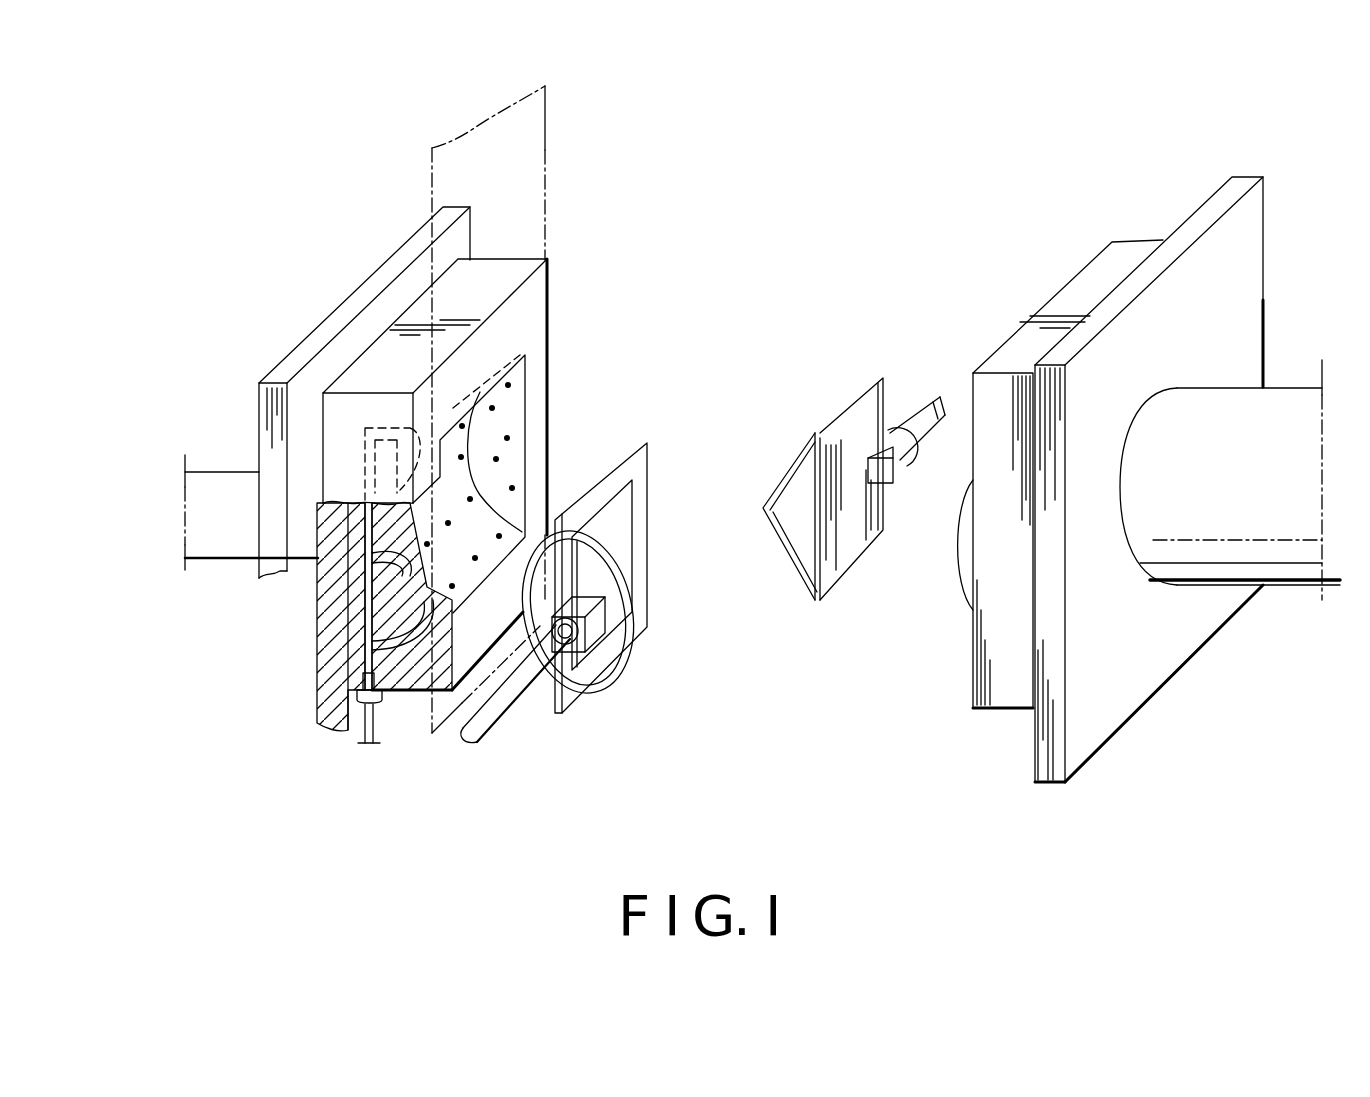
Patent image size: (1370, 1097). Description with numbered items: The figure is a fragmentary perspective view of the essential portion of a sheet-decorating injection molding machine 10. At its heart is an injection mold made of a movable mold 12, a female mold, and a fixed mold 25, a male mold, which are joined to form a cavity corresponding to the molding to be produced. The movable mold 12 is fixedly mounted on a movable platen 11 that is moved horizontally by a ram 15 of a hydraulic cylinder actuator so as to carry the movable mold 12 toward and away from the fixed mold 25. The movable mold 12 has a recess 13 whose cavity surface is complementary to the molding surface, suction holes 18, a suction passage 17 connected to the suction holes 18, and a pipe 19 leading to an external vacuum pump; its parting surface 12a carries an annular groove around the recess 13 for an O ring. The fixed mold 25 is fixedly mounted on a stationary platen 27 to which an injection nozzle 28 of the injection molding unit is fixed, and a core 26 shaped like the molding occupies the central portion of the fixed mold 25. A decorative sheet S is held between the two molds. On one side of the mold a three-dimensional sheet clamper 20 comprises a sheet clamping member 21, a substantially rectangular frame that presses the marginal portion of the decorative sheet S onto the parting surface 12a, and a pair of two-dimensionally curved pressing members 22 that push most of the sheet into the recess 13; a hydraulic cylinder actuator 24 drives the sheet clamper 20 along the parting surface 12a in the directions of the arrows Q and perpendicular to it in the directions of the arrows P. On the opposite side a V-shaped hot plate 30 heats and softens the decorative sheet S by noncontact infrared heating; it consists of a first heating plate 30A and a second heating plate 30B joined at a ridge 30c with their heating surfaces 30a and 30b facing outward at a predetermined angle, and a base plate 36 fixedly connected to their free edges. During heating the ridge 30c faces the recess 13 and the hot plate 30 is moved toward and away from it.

The sheet-decorating injection molding machine 10 is at (293, 158).
The movable platen 11 is at (327, 330).
The movable mold 12 is at (409, 338).
The parting surface 12a is at (527, 313).
The recess 13 is at (503, 423).
The ram 15 is at (217, 483).
The suction passage 17 is at (345, 648).
The suction holes 18 is at (400, 577).
The pipe 19 is at (362, 733).
The three-dimensional sheet clamper 20 is at (596, 694).
The sheet clamping member 21 is at (613, 647).
The pressing members 22 is at (605, 515).
The hydraulic cylinder actuator 24 is at (490, 737).
The fixed mold 25 is at (984, 681).
The core 26 is at (972, 555).
The stationary platen 27 is at (1048, 783).
The injection nozzle 28 is at (1277, 563).
The V-shaped hot plate 30 is at (811, 507).
The first heating plate 30A is at (782, 475).
The second heating plate 30B is at (795, 577).
The heating surface 30a is at (770, 493).
The heating surface 30b is at (782, 543).
The ridge 30c is at (762, 508).
The base plate 36 is at (850, 533).
The decorative sheet S is at (540, 146).
The arrows P is at (662, 598).
The arrows Q is at (673, 640).